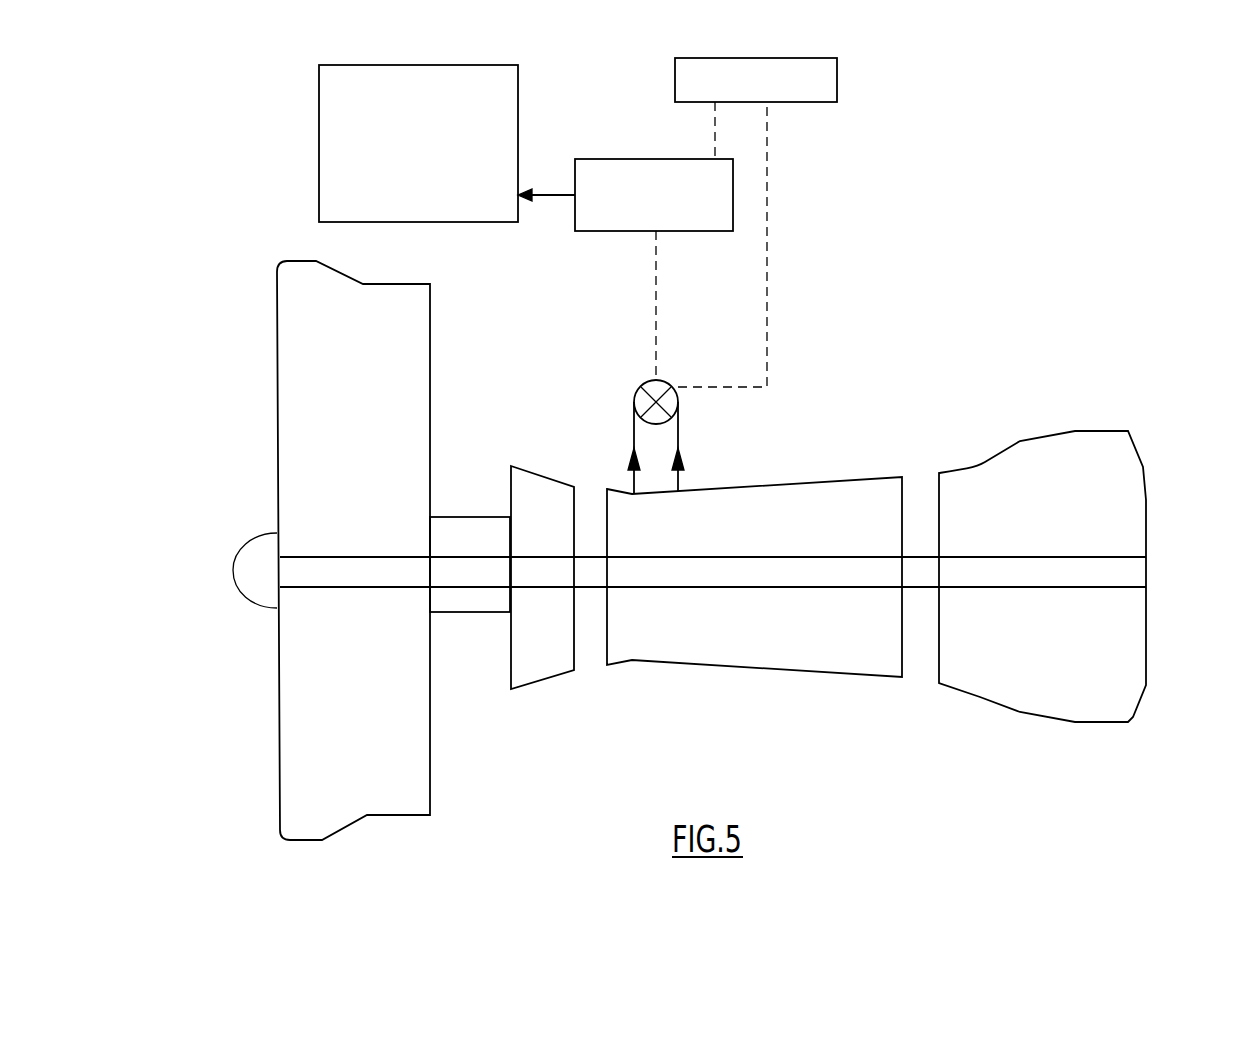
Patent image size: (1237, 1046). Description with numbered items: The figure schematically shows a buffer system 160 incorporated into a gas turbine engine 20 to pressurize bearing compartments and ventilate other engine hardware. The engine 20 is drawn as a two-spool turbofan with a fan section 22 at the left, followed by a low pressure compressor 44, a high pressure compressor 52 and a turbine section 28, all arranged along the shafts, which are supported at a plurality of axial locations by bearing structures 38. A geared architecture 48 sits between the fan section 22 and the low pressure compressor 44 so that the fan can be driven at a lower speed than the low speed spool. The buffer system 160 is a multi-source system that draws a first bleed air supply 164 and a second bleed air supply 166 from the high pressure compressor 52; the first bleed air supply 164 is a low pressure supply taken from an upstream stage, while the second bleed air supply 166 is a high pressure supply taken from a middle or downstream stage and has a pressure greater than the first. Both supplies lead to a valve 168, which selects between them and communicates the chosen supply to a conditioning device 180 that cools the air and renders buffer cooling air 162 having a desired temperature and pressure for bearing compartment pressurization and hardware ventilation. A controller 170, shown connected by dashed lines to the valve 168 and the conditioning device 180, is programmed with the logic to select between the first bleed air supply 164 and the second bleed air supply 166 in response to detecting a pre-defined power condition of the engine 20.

The gas turbine engine 20 is at (1142, 360).
The fan section 22 is at (367, 731).
The turbine section 28 is at (1059, 510).
The bearing structures 38 is at (376, 578).
The low pressure compressor 44 is at (560, 643).
The geared architecture 48 is at (486, 573).
The high pressure compressor 52 is at (779, 643).
The buffer system 160 is at (792, 256).
The buffer cooling air 162 is at (547, 195).
The first bleed air supply 164 is at (632, 460).
The second bleed air supply 166 is at (684, 462).
The valve 168 is at (668, 386).
The controller 170 is at (837, 83).
The conditioning device 180 is at (677, 159).